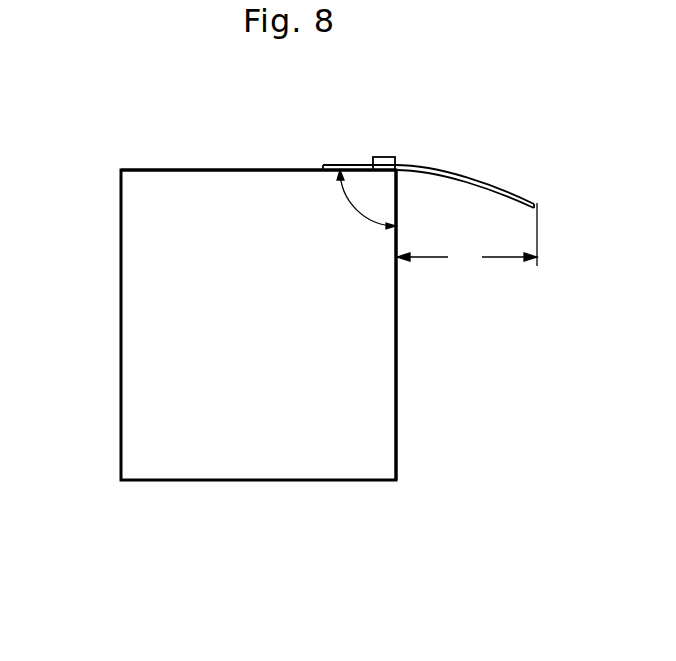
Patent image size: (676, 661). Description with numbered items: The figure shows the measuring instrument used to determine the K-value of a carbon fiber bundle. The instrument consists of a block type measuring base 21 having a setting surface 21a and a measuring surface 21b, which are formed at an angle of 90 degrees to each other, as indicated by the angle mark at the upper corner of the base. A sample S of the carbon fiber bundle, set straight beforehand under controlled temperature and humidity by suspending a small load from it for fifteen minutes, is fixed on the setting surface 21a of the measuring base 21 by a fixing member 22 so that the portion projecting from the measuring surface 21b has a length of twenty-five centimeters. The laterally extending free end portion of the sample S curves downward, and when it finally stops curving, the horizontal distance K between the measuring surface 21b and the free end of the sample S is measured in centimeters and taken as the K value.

The measuring base 21 is at (119, 348).
The setting surface 21a is at (272, 170).
The measuring surface 21b is at (397, 325).
The fixing member 22 is at (383, 157).
The sample S is at (471, 177).
The horizontal distance K is at (467, 237).
The angle of ninety degrees 90 is at (360, 202).